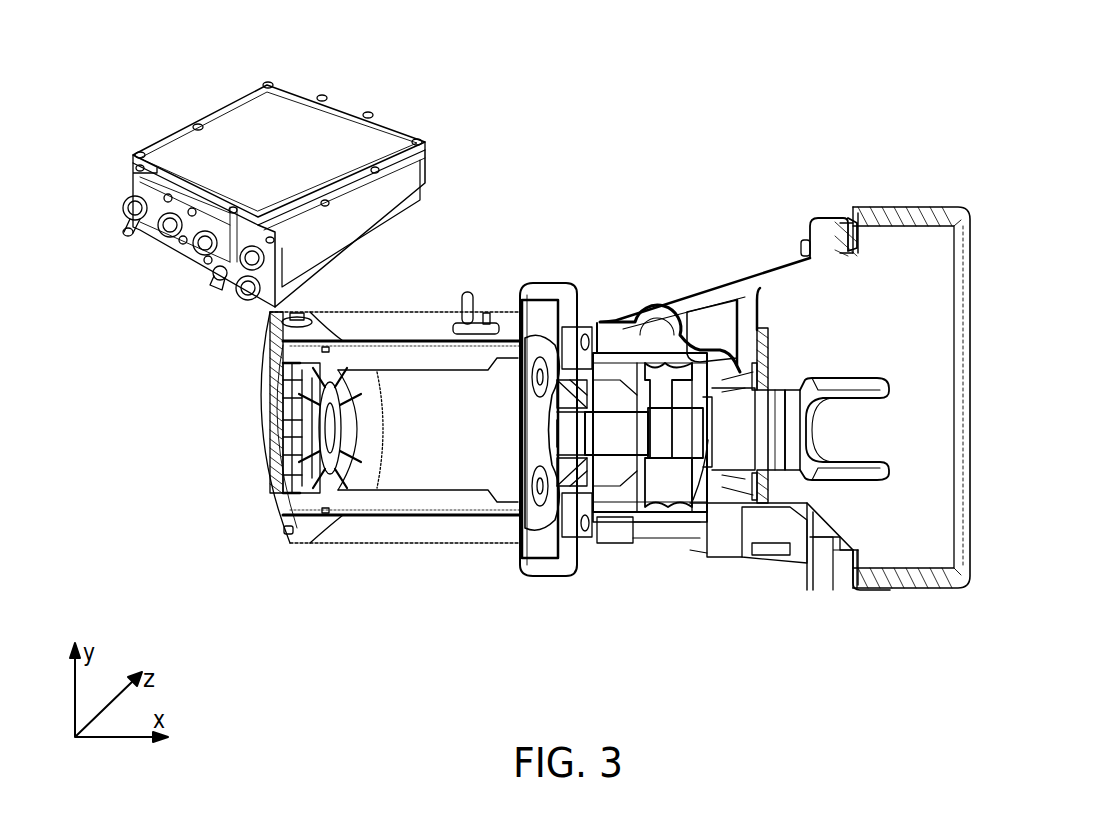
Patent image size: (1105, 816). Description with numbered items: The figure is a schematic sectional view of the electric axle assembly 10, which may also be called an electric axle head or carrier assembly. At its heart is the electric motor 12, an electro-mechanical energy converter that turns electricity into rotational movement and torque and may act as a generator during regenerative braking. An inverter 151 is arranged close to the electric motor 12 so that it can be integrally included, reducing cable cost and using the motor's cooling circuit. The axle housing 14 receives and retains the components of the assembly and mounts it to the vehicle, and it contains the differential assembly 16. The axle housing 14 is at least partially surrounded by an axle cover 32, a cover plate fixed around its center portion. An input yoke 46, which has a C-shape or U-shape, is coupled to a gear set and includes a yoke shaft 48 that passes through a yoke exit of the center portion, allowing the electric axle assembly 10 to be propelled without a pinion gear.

The electric axle assembly 10 is at (1018, 121).
The electric motor 12 is at (390, 547).
The axle housing 14 is at (728, 285).
The differential assembly 16 is at (617, 547).
The axle cover 32 is at (770, 347).
The input yoke 46 is at (855, 383).
The yoke shaft 48 is at (693, 500).
The inverter 151 is at (268, 85).